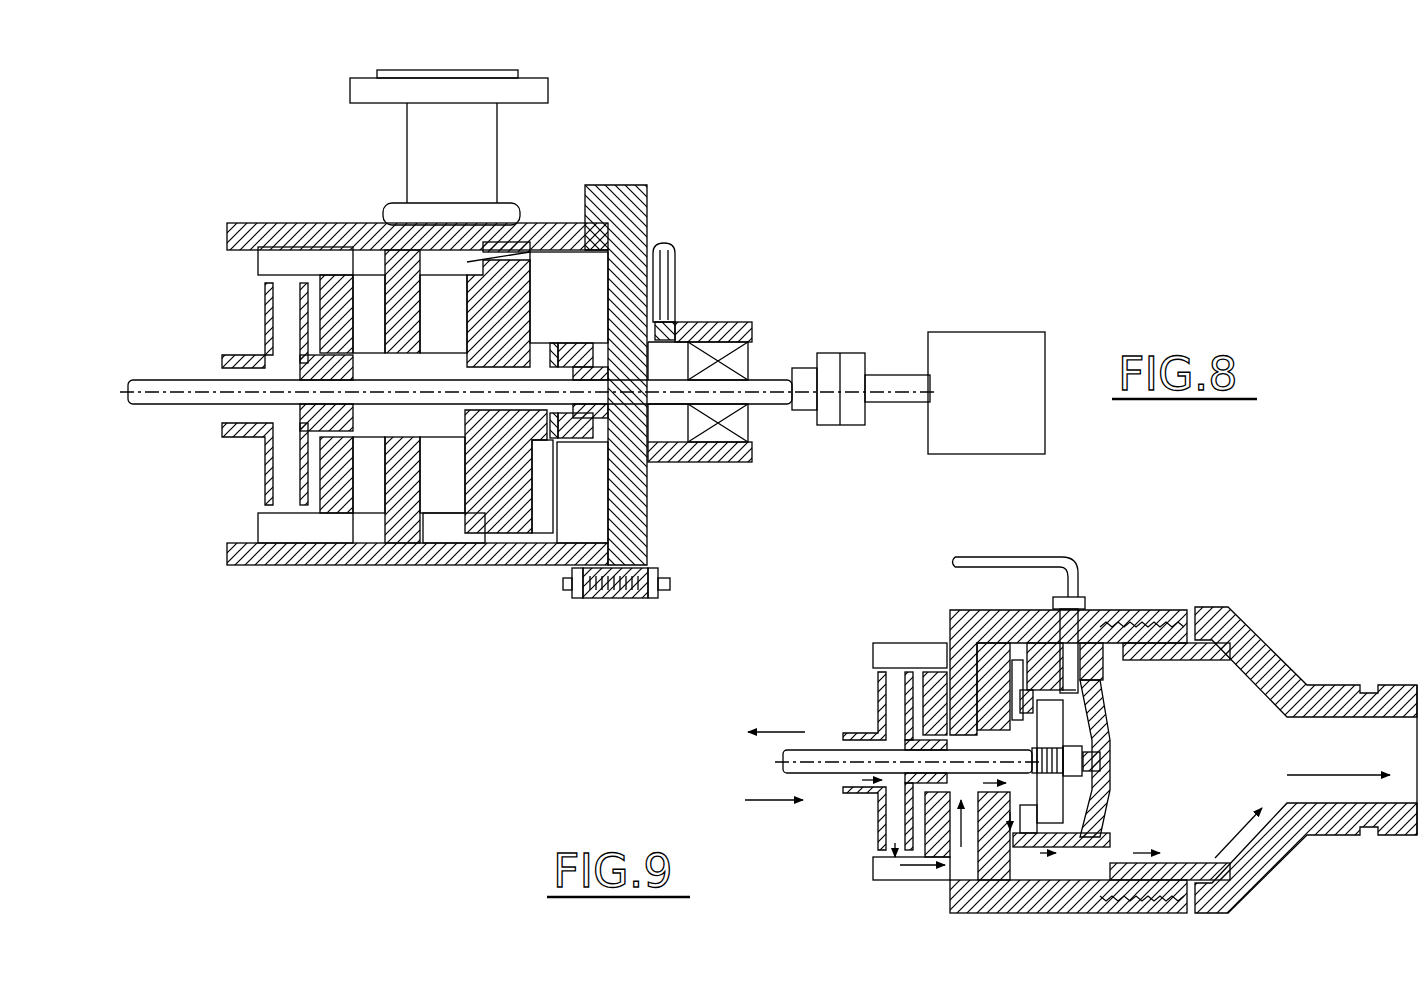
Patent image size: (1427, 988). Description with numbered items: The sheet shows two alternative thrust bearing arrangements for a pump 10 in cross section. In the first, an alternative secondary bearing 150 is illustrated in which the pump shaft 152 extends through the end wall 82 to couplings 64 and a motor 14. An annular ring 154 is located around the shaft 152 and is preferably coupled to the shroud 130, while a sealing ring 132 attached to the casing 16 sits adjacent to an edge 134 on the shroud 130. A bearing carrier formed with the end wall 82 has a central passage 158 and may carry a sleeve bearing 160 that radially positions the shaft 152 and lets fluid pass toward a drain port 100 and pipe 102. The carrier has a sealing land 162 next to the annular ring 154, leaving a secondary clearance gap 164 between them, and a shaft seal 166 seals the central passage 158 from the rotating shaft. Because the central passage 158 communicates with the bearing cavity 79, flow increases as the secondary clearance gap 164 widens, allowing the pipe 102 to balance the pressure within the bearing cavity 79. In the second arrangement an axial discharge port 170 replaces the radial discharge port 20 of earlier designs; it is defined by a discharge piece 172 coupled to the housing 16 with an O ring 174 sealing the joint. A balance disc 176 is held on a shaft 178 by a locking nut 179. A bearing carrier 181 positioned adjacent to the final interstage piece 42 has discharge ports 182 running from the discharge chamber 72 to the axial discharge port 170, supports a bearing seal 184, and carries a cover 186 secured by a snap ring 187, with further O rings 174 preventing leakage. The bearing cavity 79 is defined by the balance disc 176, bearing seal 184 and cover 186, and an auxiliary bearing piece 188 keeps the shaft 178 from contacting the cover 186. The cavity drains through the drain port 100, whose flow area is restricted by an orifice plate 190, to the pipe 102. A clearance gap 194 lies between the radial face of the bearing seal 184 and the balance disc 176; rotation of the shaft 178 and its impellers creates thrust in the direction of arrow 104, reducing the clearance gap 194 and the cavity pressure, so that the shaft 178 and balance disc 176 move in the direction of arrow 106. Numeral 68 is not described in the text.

In FIG. 8, the pump 10 is at (266, 100).
In FIG. 9, the pump 10 is at (868, 590).
In FIG. 8, the motor 14 is at (975, 345).
In FIG. 9, the casing 16 is at (950, 893).
In FIG. 8, the radial discharge port 20 is at (415, 138).
In FIG. 9, the final interstage piece 42 is at (987, 863).
In FIG. 8, the couplings 64 is at (828, 362).
In FIG. 8, the impeller 68 is at (246, 348).
In FIG. 9, the impeller 68 is at (855, 712).
In FIG. 9, the discharge chamber 72 is at (945, 808).
In FIG. 8, the bearing cavity 79 is at (600, 487).
In FIG. 9, the bearing cavity 79 is at (1098, 806).
In FIG. 8, the end wall 82 is at (643, 543).
In FIG. 8, the drain port 100 is at (672, 320).
In FIG. 9, the drain port 100 is at (1072, 648).
In FIG. 8, the pipe 102 is at (670, 245).
In FIG. 9, the pipe 102 is at (1000, 558).
In FIG. 9, the arrow 104 is at (785, 735).
In FIG. 9, the arrow 106 is at (760, 821).
In FIG. 8, the shroud 130 is at (507, 267).
In FIG. 8, the sealing ring 132 is at (490, 547).
In FIG. 8, the edge 134 is at (477, 510).
In FIG. 8, the secondary bearing 150 is at (600, 512).
In FIG. 8, the pump shaft 152 is at (153, 387).
In FIG. 8, the annular ring 154 is at (506, 396).
In FIG. 8, the central passage 158 is at (550, 415).
In FIG. 8, the sleeve bearing 160 is at (740, 427).
In FIG. 8, the sealing land 162 is at (566, 458).
In FIG. 8, the secondary clearance gap 164 is at (550, 370).
In FIG. 8, the shaft seal 166 is at (602, 370).
In FIG. 9, the axial discharge port 170 is at (1367, 733).
In FIG. 9, the discharge piece 172 is at (1245, 632).
In FIG. 9, the O ring 174 is at (1147, 620).
In FIG. 9, the balance disc 176 is at (1055, 717).
In FIG. 9, the shaft 178 is at (785, 752).
In FIG. 9, the locking nut 179 is at (1105, 742).
In FIG. 9, the bearing carrier 181 is at (1070, 870).
In FIG. 9, the discharge ports 182 is at (1105, 845).
In FIG. 9, the bearing seal 184 is at (1018, 713).
In FIG. 9, the cover 186 is at (1130, 790).
In FIG. 9, the snap ring 187 is at (1105, 682).
In FIG. 9, the auxiliary bearing piece 188 is at (1078, 788).
In FIG. 9, the orifice plate 190 is at (1092, 638).
In FIG. 9, the clearance gap 194 is at (1028, 713).